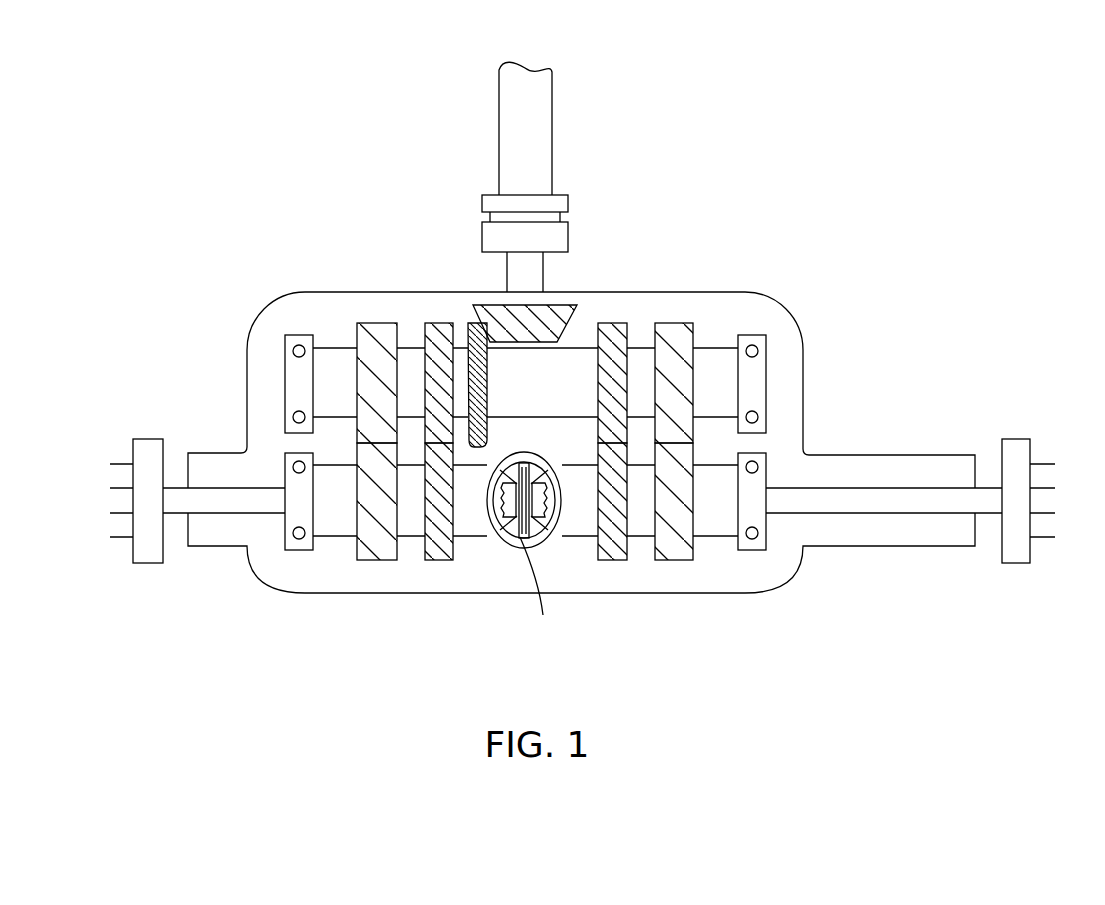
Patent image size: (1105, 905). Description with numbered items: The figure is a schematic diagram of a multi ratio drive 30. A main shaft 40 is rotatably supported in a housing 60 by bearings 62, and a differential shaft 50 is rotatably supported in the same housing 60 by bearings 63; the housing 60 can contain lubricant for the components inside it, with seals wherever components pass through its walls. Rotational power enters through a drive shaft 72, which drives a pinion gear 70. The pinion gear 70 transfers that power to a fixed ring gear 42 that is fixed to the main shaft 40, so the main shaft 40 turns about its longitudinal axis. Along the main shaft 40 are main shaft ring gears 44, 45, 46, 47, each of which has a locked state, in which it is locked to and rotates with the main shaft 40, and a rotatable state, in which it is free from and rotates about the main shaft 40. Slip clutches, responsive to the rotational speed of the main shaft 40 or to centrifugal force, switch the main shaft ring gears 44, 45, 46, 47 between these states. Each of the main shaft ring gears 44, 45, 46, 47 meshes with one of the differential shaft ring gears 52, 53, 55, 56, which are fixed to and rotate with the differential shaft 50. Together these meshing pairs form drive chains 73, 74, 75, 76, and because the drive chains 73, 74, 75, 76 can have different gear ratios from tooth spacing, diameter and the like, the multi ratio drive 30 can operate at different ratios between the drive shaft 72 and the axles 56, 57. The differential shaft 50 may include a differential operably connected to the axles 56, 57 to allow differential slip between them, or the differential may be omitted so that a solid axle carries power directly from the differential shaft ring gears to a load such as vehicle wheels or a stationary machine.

The multi ratio drive 30 is at (748, 160).
The main shaft 40 is at (342, 358).
The fixed ring gear 42 is at (475, 330).
The main shaft ring gear 44 is at (393, 327).
The main shaft ring gear 45 is at (443, 327).
The main shaft ring gear 46 is at (618, 328).
The main shaft ring gear 47 is at (675, 328).
The differential shaft 50 is at (335, 545).
The differential shaft ring gear 52 is at (378, 562).
The differential shaft ring gear 53 is at (443, 560).
The differential shaft ring gear 55 is at (612, 560).
The axle 56 is at (168, 492).
The axle 57 is at (997, 498).
The housing 60 is at (803, 415).
The bearings 62 is at (292, 379).
The bearings 63 is at (300, 552).
The pinion gear 70 is at (563, 303).
The drive shaft 72 is at (548, 128).
The drive chain 73 is at (382, 598).
The drive chain 74 is at (440, 598).
The drive chain 75 is at (612, 598).
The drive chain 76 is at (668, 598).